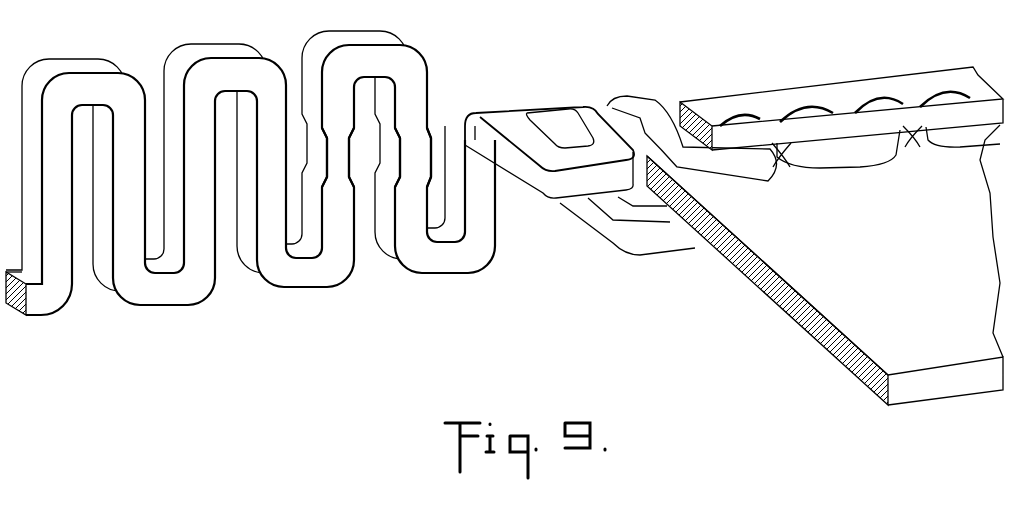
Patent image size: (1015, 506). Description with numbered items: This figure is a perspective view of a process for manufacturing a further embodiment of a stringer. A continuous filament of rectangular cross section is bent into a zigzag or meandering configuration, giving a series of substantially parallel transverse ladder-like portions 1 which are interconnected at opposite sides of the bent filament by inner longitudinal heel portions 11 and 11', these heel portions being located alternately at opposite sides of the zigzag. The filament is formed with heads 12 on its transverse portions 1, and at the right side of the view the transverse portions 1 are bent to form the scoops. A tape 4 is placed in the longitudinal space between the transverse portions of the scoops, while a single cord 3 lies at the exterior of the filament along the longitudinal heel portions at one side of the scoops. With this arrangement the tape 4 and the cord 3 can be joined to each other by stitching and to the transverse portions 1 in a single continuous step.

The transverse ladder-like portions 1 is at (583, 118).
The cord 3 is at (829, 93).
The tape 4 is at (813, 280).
The inner longitudinal heel portions 11 is at (500, 167).
The inner longitudinal heel portions 11' is at (424, 271).
The heads 12 is at (403, 157).